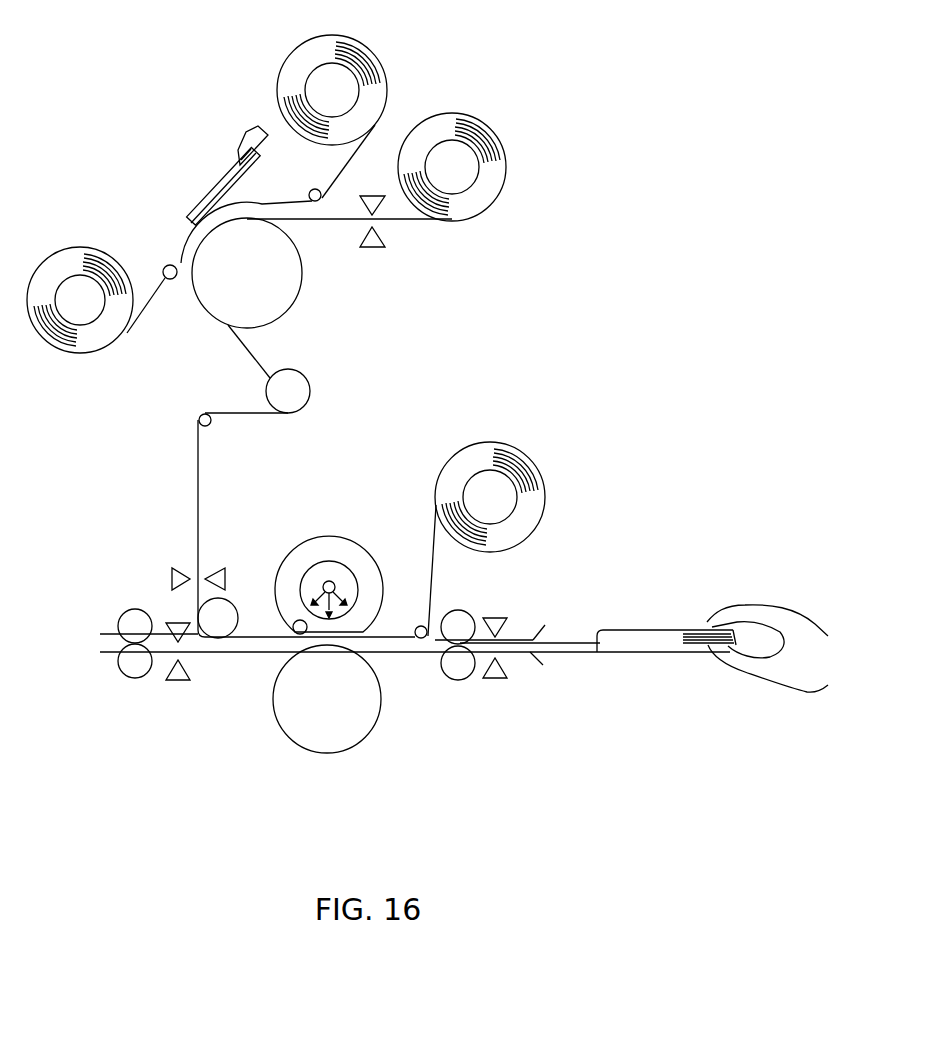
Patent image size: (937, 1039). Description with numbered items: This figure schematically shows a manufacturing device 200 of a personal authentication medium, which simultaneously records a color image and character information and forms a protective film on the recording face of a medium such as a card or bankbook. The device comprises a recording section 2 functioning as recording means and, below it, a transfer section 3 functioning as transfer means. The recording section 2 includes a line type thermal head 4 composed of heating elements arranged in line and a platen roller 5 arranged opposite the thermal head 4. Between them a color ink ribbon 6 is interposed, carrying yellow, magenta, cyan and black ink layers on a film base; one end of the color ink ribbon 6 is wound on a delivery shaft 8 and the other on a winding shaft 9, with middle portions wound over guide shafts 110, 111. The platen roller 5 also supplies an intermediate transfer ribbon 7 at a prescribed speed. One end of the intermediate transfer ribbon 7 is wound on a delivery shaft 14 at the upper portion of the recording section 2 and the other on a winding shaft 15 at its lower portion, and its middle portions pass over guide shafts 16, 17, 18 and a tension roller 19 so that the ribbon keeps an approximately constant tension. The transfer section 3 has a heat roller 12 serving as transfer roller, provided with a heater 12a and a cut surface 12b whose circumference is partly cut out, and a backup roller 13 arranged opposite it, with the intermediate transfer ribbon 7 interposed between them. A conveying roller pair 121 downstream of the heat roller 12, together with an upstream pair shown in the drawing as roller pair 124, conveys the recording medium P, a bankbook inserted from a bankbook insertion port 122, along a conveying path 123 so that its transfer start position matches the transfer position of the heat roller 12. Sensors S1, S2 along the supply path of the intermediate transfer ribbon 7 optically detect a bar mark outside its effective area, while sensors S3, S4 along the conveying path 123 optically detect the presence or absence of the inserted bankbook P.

The recording section 2 is at (186, 136).
The transfer section 3 is at (208, 697).
The thermal head 4 is at (191, 212).
The platen roller 5 is at (268, 303).
The color ink ribbon 6 is at (157, 302).
The intermediate transfer ribbon 7 is at (403, 221).
The delivery shaft 8 is at (346, 78).
The winding shaft 9 is at (87, 313).
The heat roller 12 is at (329, 550).
The heater 12a is at (334, 584).
The cut surface 12b is at (292, 632).
The backup roller 13 is at (325, 737).
The delivery shaft 14 is at (455, 160).
The winding shaft 15 is at (488, 487).
The guide shaft 16 is at (210, 426).
The guide shaft 17 is at (223, 612).
The guide shaft 18 is at (418, 625).
The tension roller 19 is at (294, 393).
The guide shaft 110 is at (308, 190).
The guide shaft 111 is at (163, 268).
The conveying roller pair 121 is at (459, 665).
The bankbook insertion port 122 is at (543, 636).
The conveying path 123 is at (414, 654).
The conveying roller pair 124 is at (135, 667).
The manufacturing device of a personal authentication medium 200 is at (590, 193).
The recording medium P is at (661, 638).
The sensor S1 is at (372, 250).
The sensor S2 is at (172, 578).
The sensor S3 is at (178, 682).
The sensor S4 is at (496, 680).